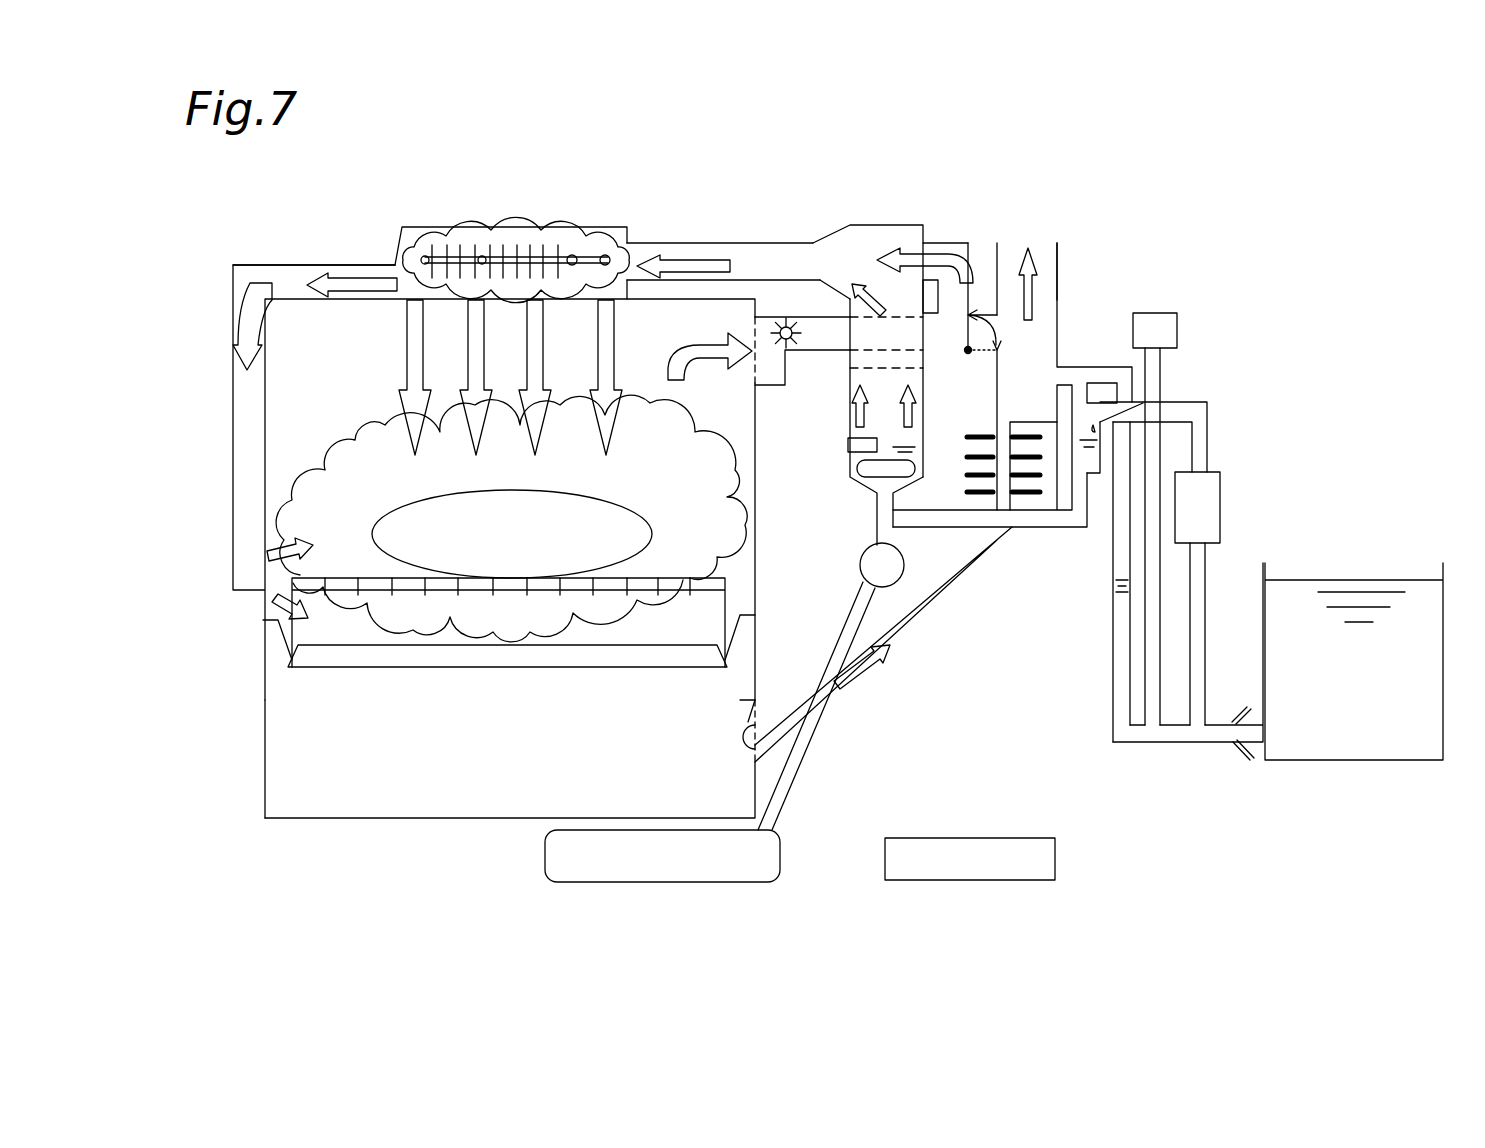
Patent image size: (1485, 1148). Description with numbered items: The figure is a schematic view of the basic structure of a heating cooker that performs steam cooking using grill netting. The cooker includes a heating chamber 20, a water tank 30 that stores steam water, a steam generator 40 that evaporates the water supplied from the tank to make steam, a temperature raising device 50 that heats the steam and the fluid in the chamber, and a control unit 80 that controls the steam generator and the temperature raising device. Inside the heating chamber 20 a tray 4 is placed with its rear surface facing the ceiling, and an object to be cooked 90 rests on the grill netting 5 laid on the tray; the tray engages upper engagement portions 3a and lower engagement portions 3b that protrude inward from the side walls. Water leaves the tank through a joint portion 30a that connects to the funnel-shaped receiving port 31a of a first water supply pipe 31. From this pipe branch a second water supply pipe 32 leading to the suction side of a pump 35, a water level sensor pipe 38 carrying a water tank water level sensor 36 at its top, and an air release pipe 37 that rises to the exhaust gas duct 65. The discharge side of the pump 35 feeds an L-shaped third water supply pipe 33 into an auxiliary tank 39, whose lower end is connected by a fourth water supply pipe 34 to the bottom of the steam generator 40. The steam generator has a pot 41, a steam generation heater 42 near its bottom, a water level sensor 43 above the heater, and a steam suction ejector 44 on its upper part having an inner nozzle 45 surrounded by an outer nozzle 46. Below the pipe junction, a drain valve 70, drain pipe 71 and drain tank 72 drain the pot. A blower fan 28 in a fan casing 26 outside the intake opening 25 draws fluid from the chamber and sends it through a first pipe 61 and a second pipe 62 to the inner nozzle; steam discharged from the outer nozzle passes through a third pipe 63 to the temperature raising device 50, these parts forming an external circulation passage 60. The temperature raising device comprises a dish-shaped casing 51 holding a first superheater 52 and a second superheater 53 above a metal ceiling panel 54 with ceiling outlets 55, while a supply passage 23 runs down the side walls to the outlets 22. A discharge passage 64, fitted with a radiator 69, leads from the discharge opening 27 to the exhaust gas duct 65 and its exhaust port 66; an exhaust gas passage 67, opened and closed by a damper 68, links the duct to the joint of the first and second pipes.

The upper engagement portions 3a is at (270, 640).
The lower engagement portions 3b is at (270, 712).
The tray 4 is at (348, 658).
The grill netting 5 is at (675, 577).
The heating chamber 20 is at (290, 400).
The outlet 22 is at (277, 540).
The supply passage 23 is at (310, 267).
The intake opening 25 is at (752, 367).
The fan casing 26 is at (757, 420).
The discharge opening 27 is at (757, 717).
The blower fan 28 is at (800, 327).
The water tank 30 is at (1345, 762).
The joint portion 30a is at (1250, 745).
The first water supply pipe 31 is at (1150, 745).
The funnel-shaped receiving port 31a is at (1235, 763).
The second water supply pipe 32 is at (1207, 585).
The third water supply pipe 33 is at (1208, 440).
The fourth water supply pipe 34 is at (1033, 537).
The pump 35 is at (1222, 500).
The water tank water level sensor 36 is at (1178, 322).
The air release pipe 37 is at (1112, 672).
The water level sensor pipe 38 is at (1163, 390).
The auxiliary tank 39 is at (1100, 477).
The steam generator 40 is at (927, 193).
The pot 41 is at (845, 425).
The steam generation heater 42 is at (877, 472).
The water level sensor 43 is at (853, 450).
The steam suction ejector 44 is at (829, 209).
The inner nozzle 45 is at (873, 242).
The outer nozzle 46 is at (842, 240).
The temperature raising device 50 is at (426, 210).
The dish-shaped casing 51 is at (545, 227).
The first superheater 52 is at (508, 253).
The second superheater 53 is at (590, 257).
The ceiling panel 54 is at (502, 300).
The ceiling outlets 55 is at (423, 300).
The external circulation passage 60 is at (949, 228).
The first pipe 61 is at (815, 353).
The second pipe 62 is at (972, 287).
The third pipe 63 is at (705, 243).
The discharge passage 64 is at (918, 635).
The exhaust gas duct 65 is at (1058, 302).
The exhaust port 66 is at (1045, 253).
The exhaust gas passage 67 is at (983, 353).
The damper 68 is at (968, 350).
The radiator 69 is at (968, 457).
The drain valve 70 is at (857, 570).
The drain pipe 71 is at (795, 775).
The drain tank 72 is at (700, 898).
The control unit 80 is at (973, 880).
The object to be cooked 90 is at (628, 528).